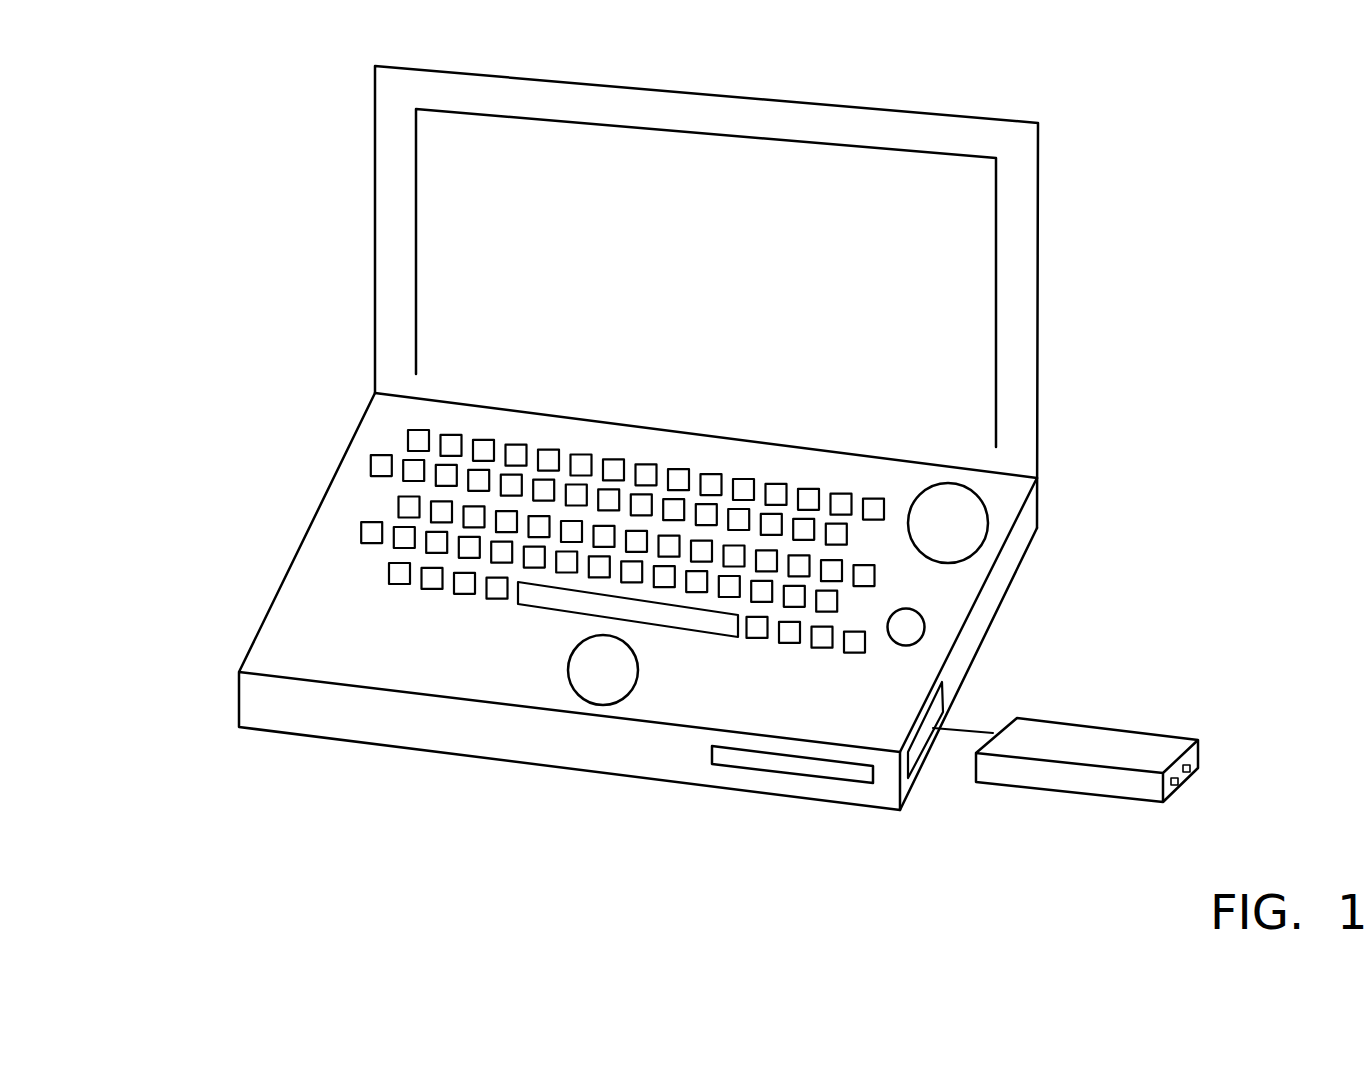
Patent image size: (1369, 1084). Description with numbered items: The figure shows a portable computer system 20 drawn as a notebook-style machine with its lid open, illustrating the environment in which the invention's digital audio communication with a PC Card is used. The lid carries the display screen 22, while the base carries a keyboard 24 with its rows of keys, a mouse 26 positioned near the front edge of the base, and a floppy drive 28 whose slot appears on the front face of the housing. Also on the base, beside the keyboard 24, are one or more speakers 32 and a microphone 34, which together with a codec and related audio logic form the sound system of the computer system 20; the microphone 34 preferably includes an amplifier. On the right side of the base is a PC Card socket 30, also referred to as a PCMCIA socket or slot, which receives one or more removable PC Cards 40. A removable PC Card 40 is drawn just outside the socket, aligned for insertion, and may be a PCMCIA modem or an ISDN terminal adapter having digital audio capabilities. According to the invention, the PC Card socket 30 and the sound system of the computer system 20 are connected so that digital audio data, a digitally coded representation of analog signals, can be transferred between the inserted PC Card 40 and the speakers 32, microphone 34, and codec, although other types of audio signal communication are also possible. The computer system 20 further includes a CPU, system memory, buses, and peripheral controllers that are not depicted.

The portable computer system 20 is at (192, 158).
The display screen 22 is at (440, 178).
The keyboard 24 is at (337, 512).
The mouse 26 is at (593, 690).
The floppy drive 28 is at (842, 772).
The PC Card socket 30 is at (920, 740).
The speakers 32 is at (978, 524).
The microphone 34 is at (920, 629).
The PC Card 40 is at (1157, 742).